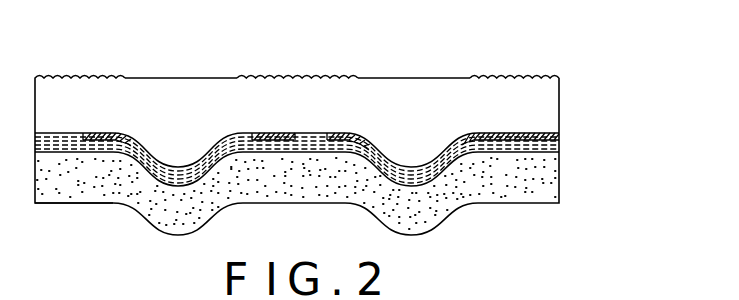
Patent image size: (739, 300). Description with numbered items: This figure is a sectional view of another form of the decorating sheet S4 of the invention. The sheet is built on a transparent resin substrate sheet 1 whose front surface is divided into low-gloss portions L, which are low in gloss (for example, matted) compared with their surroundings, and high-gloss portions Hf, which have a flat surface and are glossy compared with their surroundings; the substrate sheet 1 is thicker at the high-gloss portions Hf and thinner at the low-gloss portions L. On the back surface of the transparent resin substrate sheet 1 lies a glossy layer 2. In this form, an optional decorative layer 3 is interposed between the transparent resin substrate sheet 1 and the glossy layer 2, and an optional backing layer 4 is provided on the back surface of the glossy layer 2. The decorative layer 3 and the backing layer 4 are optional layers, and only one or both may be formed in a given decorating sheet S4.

The transparent resin substrate sheet 1 is at (554, 109).
The glossy layer 2 is at (550, 152).
The decorative layer 3 is at (559, 136).
The backing layer 4 is at (550, 185).
The high-gloss portions Hf is at (420, 78).
The low-gloss portions L is at (520, 76).
The decorating sheet S4 is at (587, 78).